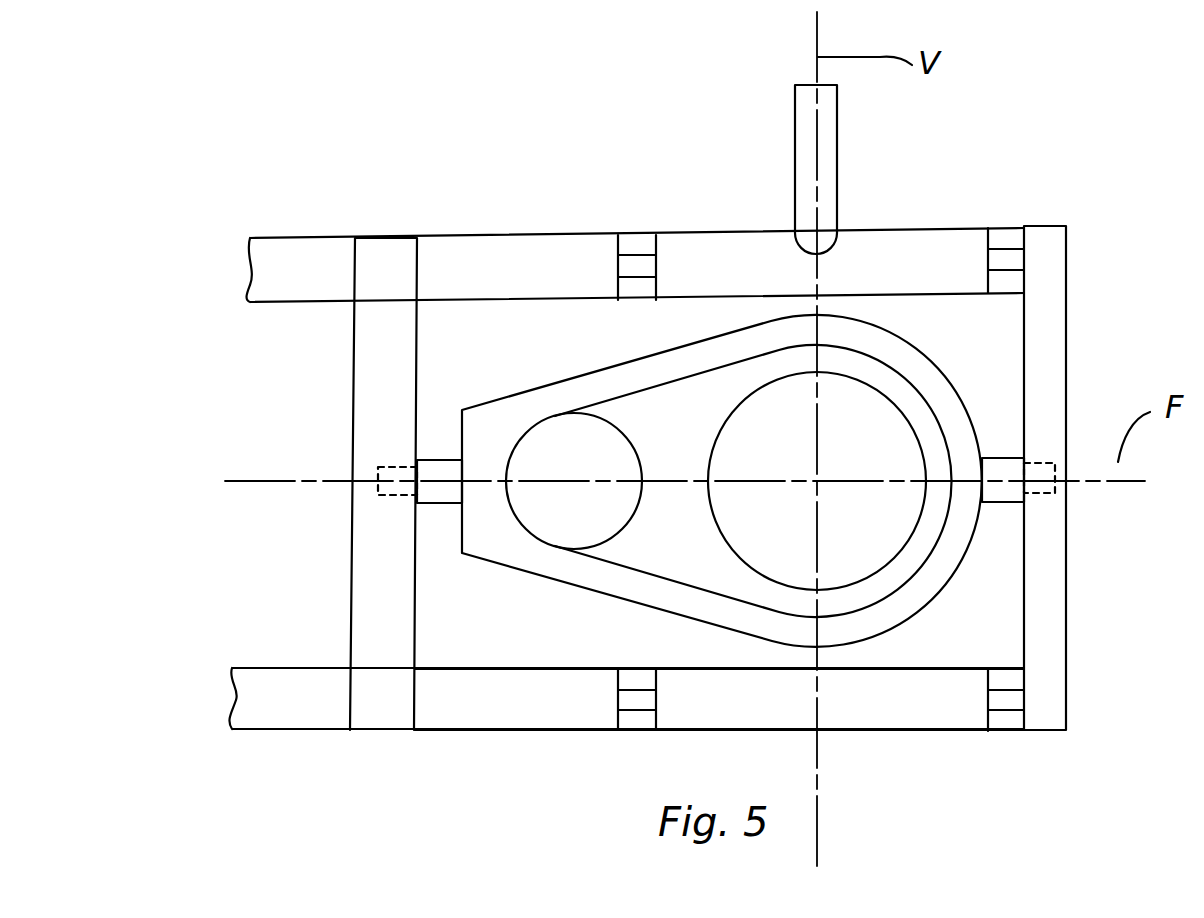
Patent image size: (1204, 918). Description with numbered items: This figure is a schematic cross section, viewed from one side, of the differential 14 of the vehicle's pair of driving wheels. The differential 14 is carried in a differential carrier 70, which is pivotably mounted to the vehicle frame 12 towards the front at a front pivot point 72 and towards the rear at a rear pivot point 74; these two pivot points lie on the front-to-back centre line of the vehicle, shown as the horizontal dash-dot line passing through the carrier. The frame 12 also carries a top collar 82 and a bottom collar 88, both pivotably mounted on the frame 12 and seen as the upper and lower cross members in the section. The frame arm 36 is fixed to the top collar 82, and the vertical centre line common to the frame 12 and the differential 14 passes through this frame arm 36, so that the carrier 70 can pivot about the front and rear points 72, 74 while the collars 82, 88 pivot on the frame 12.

The vehicle frame 12 is at (262, 715).
The differential 14 is at (862, 562).
The frame arm 36 is at (832, 178).
The differential carrier 70 is at (945, 563).
The front pivot point 72 is at (378, 470).
The rear pivot point 74 is at (1040, 460).
The top collar 82 is at (707, 247).
The bottom collar 88 is at (945, 718).